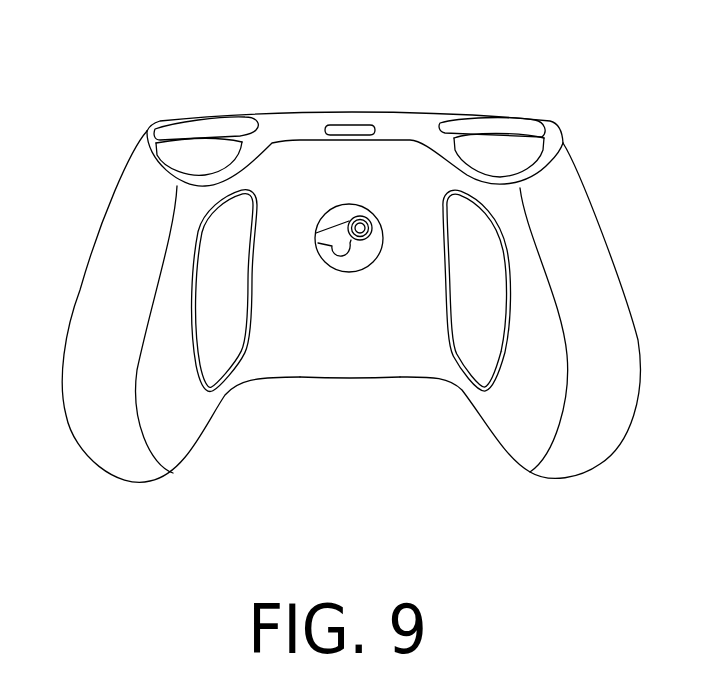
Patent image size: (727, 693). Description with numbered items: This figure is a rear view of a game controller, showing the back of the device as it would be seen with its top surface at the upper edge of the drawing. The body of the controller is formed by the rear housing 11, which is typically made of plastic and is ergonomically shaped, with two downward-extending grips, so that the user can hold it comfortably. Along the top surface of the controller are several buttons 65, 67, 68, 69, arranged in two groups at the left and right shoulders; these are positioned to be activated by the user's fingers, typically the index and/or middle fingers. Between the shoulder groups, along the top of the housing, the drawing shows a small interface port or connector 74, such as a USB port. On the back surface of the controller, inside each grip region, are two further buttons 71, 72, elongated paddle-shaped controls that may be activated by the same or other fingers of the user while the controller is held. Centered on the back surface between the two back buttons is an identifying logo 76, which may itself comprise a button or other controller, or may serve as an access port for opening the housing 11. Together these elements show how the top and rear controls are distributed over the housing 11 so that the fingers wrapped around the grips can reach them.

The rear housing 11 is at (146, 501).
The button 65 is at (224, 124).
The button 67 is at (177, 154).
The button 68 is at (466, 123).
The button 69 is at (515, 153).
The button 71 is at (223, 326).
The button 72 is at (477, 323).
The battery door latch 74 is at (347, 124).
The identifying logo 76 is at (370, 224).